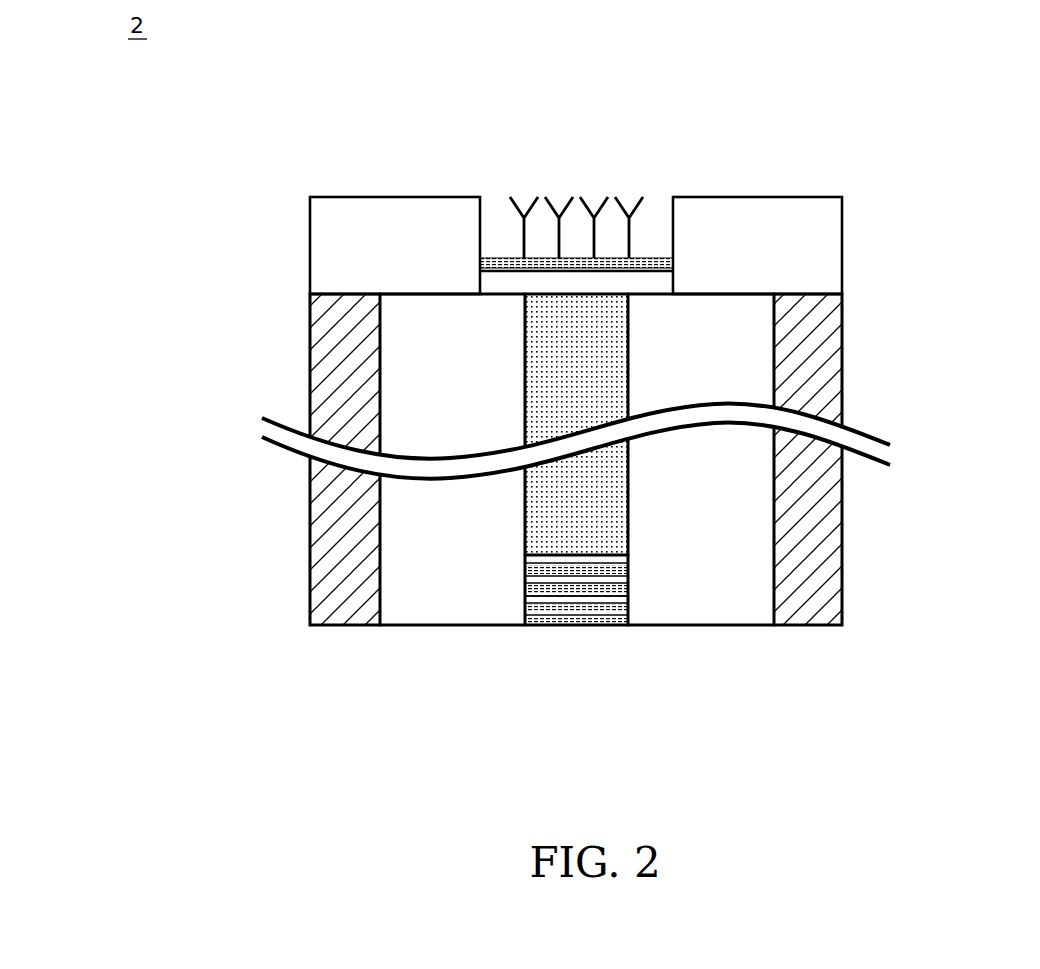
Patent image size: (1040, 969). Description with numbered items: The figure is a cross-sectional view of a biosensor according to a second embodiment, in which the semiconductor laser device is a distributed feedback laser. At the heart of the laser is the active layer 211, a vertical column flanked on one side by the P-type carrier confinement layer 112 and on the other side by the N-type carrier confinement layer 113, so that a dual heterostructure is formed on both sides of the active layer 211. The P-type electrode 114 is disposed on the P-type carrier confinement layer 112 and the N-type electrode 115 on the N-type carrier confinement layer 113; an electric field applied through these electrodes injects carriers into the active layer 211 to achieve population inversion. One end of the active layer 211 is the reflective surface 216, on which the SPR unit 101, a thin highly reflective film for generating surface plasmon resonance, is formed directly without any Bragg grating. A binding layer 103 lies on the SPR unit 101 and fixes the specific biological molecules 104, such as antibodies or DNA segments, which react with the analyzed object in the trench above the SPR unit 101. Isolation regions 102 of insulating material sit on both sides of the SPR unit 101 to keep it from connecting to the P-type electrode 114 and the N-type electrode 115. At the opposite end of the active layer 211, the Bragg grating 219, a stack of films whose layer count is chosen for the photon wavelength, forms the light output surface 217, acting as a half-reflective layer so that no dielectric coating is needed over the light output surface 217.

The SPR unit 101 is at (500, 283).
The isolation region 102 is at (790, 252).
The binding layer 103 is at (509, 252).
The specific biological molecules 104 is at (596, 250).
The reflective surface 216 is at (616, 275).
The active layer 211 is at (580, 355).
The P-type carrier confinement layer 112 is at (705, 578).
The N-type carrier confinement layer 113 is at (467, 585).
The P-type electrode 114 is at (820, 528).
The N-type electrode 115 is at (335, 572).
The light output surface 217 is at (606, 655).
The Bragg grating 219 is at (559, 625).